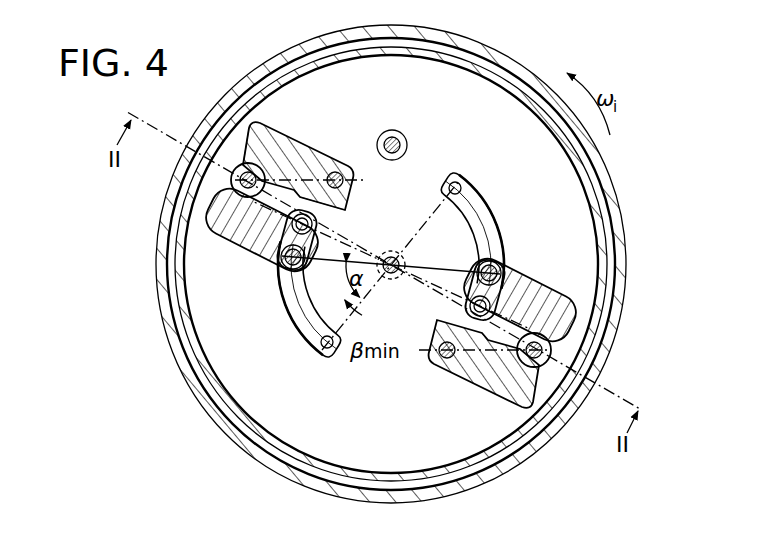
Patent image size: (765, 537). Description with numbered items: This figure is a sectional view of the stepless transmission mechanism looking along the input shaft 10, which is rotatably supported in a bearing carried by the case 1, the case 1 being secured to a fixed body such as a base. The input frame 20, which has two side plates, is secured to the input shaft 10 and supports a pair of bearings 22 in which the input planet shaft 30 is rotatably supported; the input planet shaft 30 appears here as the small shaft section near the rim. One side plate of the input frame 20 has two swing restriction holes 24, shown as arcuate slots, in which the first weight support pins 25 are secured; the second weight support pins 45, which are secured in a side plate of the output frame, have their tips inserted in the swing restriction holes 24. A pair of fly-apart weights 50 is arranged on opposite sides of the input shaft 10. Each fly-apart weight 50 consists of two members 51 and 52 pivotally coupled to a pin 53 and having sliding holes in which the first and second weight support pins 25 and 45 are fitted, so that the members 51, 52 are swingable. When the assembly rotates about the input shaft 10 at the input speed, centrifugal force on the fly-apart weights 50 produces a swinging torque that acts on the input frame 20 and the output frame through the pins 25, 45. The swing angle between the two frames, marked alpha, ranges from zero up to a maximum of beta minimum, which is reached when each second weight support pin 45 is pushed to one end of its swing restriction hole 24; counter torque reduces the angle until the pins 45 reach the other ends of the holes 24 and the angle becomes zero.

The case 1 is at (528, 62).
The input shaft 10 is at (393, 277).
The input frame 20 is at (302, 62).
The bearings 22 is at (400, 133).
The swing restriction holes 24 is at (297, 320).
The first weight support pins 25 is at (338, 171).
The input planet shaft 30 is at (390, 137).
The second weight support pins 45 is at (283, 263).
The fly-apart weights 50 is at (240, 141).
The member 51 is at (289, 147).
The member 52 is at (206, 212).
The pin 53 is at (231, 178).